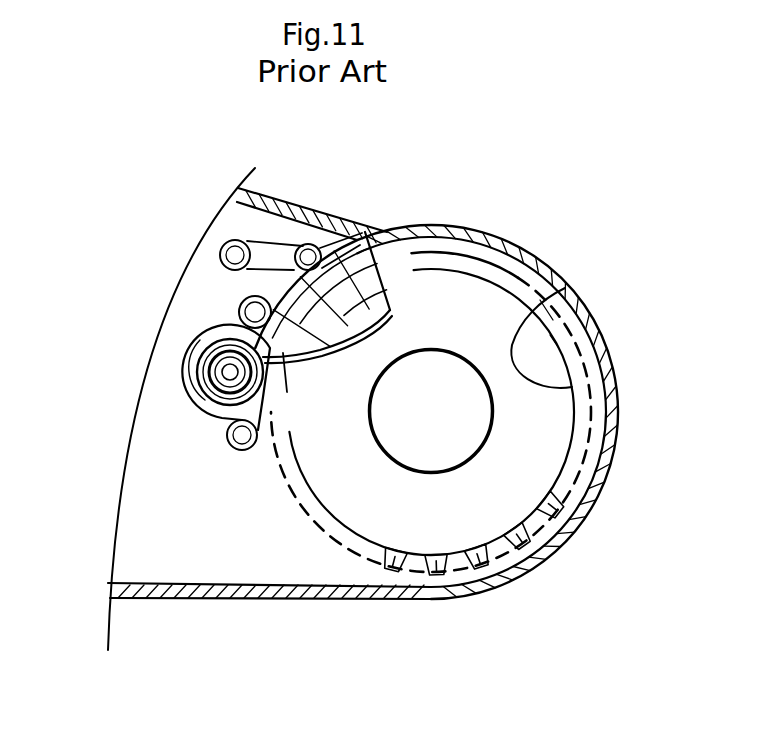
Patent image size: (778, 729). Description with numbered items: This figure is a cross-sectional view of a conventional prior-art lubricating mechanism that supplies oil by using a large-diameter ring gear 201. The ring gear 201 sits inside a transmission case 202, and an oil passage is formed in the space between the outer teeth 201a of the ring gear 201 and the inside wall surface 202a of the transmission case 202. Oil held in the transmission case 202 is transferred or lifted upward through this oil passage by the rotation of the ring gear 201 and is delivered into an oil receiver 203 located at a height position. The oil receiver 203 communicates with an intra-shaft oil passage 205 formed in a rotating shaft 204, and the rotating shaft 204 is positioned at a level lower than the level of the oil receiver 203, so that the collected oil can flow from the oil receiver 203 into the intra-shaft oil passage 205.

The ring gear 201 is at (503, 492).
The outer teeth 201a is at (431, 586).
The transmission case 202 is at (540, 262).
The inside wall surface 202a is at (565, 288).
The oil receiver 203 is at (345, 352).
The rotating shaft 204 is at (183, 391).
The intra-shaft oil passage 205 is at (197, 362).